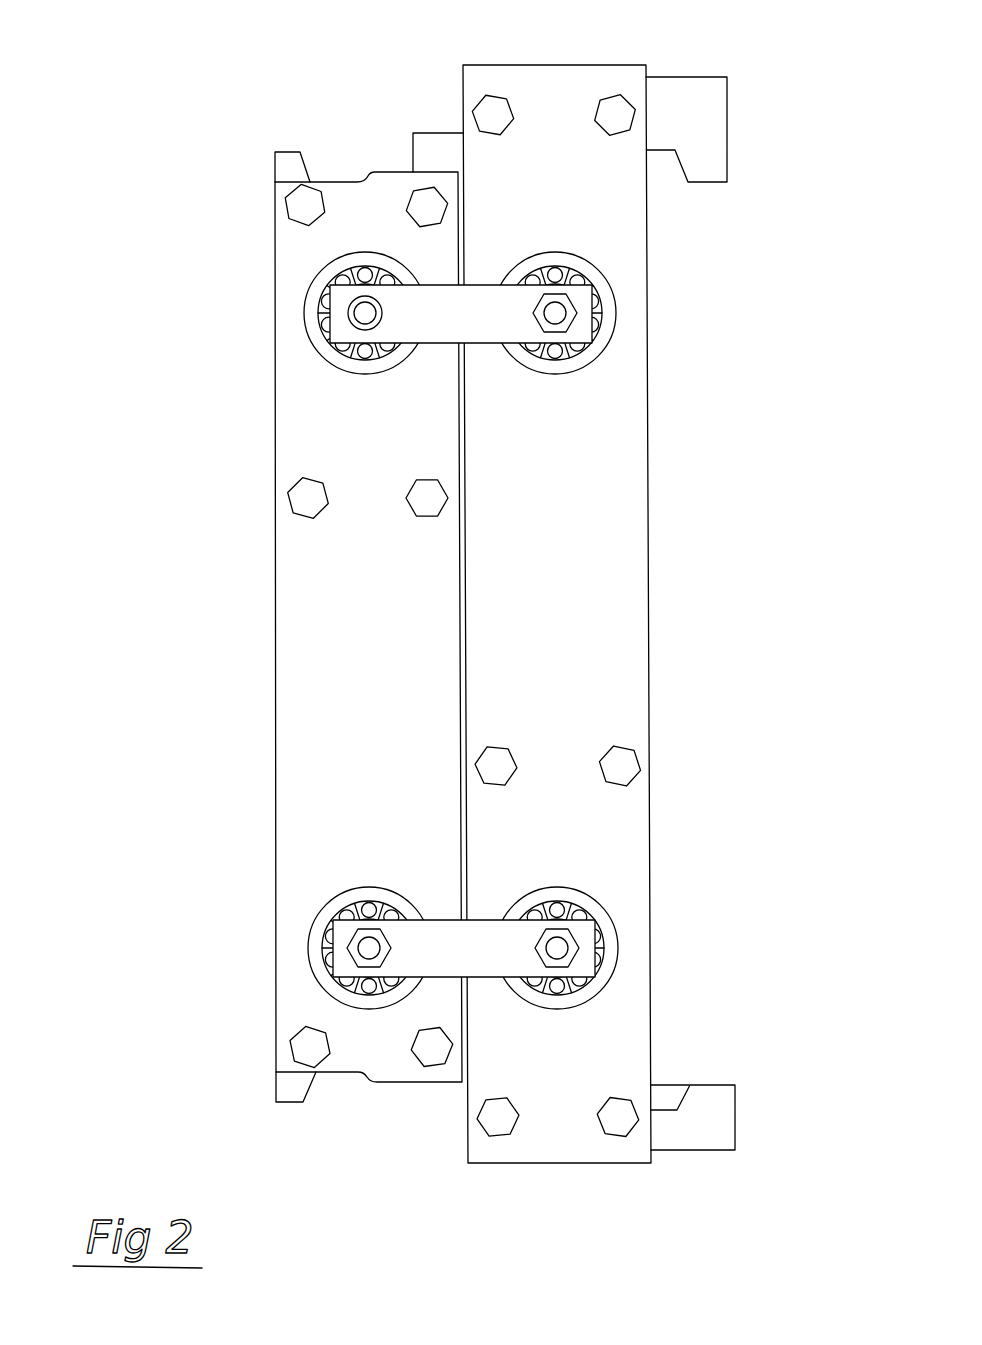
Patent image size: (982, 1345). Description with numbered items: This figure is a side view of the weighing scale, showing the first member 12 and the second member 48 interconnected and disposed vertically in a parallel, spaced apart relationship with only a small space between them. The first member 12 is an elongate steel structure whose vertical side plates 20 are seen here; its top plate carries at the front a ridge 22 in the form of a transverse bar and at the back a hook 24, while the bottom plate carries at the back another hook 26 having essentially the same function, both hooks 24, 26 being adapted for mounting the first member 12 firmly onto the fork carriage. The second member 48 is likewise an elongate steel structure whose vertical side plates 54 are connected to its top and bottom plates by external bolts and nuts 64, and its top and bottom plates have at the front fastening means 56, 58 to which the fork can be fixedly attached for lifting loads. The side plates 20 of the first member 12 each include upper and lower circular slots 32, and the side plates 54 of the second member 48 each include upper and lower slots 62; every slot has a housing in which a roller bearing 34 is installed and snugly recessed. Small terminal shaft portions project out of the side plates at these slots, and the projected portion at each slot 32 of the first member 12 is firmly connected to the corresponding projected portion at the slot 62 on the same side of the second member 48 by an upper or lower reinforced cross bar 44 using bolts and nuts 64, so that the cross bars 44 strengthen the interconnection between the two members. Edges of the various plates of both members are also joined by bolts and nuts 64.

The first member 12 is at (619, 586).
The vertical side plates 20 is at (596, 608).
The ridge 22 is at (430, 142).
The hook 24 is at (712, 138).
The hook 26 is at (718, 1113).
The slots 32 is at (620, 346).
The roller bearing 34 is at (602, 311).
The reinforced cross bar 44 is at (464, 335).
The second member 48 is at (306, 577).
The vertical side plates 54 is at (323, 655).
The fastening means 56 is at (283, 161).
The fastening means 58 is at (290, 1087).
The slots 62 is at (295, 310).
The bolts and nuts 64 is at (297, 503).